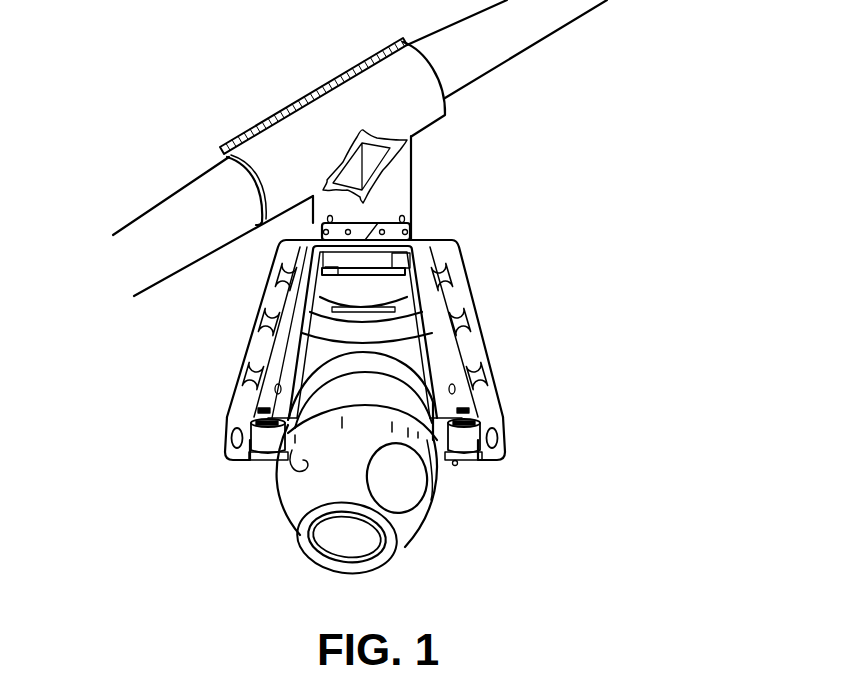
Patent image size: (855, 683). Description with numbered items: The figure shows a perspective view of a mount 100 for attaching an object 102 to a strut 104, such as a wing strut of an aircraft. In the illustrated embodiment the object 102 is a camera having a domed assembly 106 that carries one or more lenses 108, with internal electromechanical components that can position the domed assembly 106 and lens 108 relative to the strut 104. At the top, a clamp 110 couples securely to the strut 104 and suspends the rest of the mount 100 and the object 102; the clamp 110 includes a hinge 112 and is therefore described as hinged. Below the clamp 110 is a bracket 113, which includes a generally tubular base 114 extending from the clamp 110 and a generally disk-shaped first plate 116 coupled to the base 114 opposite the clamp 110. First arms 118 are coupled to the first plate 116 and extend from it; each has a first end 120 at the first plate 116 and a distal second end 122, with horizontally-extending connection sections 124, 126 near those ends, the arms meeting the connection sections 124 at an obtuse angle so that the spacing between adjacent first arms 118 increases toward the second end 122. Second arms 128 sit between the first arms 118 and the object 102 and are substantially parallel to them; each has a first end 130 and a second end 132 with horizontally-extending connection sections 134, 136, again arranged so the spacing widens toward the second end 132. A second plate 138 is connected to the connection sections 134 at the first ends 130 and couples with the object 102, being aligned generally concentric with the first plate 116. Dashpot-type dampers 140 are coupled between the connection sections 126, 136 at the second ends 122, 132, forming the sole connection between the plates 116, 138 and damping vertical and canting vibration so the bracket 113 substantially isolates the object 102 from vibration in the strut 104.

The mount 100 is at (125, 119).
The object 102 is at (437, 497).
The strut 104 is at (190, 213).
The domed assembly 106 is at (422, 522).
The lens 108 is at (403, 487).
The clamp 110 is at (383, 88).
The hinge 112 is at (283, 110).
The bracket 113 is at (560, 327).
The base 114 is at (397, 190).
The first plate 116 is at (385, 226).
The first arms 118 is at (492, 365).
The first end 120 is at (440, 255).
The second end 122 is at (483, 460).
The connection section 124 is at (412, 240).
The connection section 126 is at (458, 468).
The second arms 128 is at (262, 352).
The first end 130 is at (284, 280).
The second end 132 is at (223, 423).
The connection section 134 is at (268, 296).
The connection section 136 is at (222, 443).
The second plate 138 is at (397, 295).
The dampers 140 is at (500, 437).